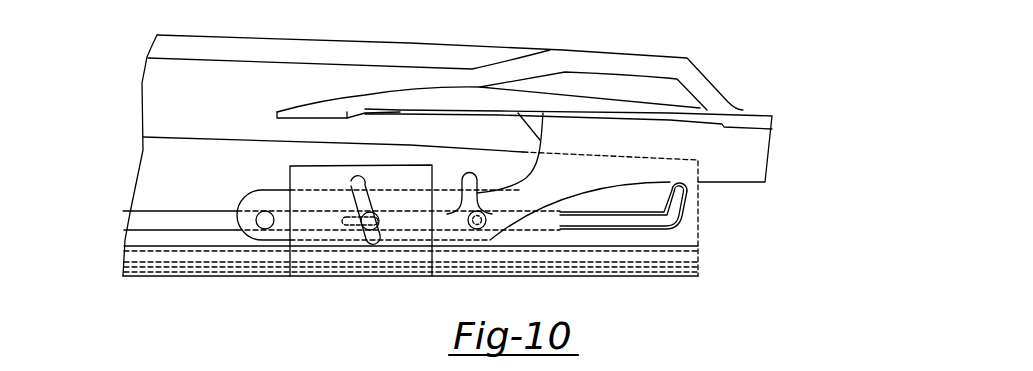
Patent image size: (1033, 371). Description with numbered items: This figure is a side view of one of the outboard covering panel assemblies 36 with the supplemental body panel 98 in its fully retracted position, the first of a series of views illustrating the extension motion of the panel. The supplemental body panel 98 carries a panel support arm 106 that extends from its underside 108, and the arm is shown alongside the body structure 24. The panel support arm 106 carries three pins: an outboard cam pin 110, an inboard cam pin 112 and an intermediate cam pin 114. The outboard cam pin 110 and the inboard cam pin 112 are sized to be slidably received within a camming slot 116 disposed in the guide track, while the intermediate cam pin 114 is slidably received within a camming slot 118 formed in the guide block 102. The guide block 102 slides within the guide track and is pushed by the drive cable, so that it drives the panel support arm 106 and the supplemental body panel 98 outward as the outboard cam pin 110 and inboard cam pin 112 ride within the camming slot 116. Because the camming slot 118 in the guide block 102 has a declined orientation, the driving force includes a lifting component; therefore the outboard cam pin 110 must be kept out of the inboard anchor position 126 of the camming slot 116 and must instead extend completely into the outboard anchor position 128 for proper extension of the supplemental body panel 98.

The vehicle body structure 24 is at (412, 43).
The outboard covering panel assembly 36 is at (713, 280).
The supplemental body panel 98 is at (742, 108).
The guide block 102 is at (290, 166).
The panel support arm 106 is at (760, 163).
The underside 108 is at (599, 119).
The outboard cam pin 110 is at (487, 217).
The inboard cam pin 112 is at (257, 213).
The intermediate cam pin 114 is at (373, 242).
The camming slot 116 is at (685, 208).
The camming slot 118 is at (352, 206).
The inboard anchor position 126 is at (469, 173).
The outboard anchor position 128 is at (690, 192).